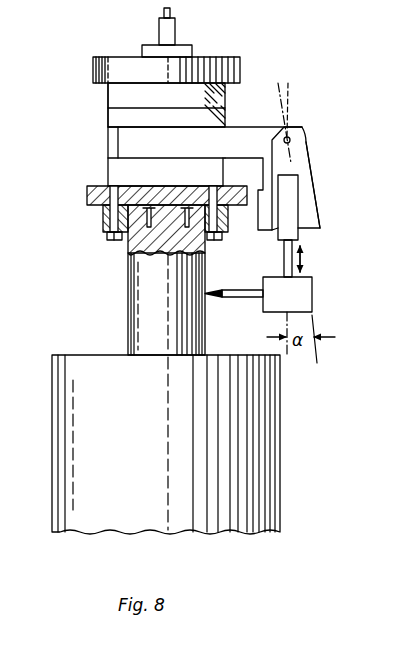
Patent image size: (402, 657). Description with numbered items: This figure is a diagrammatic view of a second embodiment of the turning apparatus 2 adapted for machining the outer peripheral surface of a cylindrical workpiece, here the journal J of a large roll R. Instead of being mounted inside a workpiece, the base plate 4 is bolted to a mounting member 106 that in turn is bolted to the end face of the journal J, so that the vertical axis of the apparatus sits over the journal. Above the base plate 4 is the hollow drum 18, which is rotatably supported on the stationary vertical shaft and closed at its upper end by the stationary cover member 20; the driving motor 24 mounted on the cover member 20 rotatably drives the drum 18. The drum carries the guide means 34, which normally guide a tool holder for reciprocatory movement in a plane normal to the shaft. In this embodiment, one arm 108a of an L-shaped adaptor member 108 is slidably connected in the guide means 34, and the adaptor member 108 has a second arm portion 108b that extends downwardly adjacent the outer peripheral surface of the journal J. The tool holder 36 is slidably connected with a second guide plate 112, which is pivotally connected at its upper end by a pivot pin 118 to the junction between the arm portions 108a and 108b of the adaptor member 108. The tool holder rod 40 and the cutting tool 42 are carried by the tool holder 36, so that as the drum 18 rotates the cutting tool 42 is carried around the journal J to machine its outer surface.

The turning apparatus 2 is at (239, 55).
The base plate 4 is at (87, 197).
The hollow drum 18 is at (118, 98).
The stationary cover member 20 is at (93, 67).
The driving motor 24 is at (175, 32).
The guide means 34 is at (117, 172).
The tool holder 36 is at (288, 197).
The tool holder shaft 40 is at (285, 267).
The cutting tool 42 is at (235, 298).
The mounting member 106 is at (103, 230).
The L-shaped adaptor member 108 is at (232, 126).
The first arm of adaptor member 108a is at (118, 143).
The second arm portion of adaptor member 108b is at (318, 215).
The second guide plate 112 is at (290, 160).
The pivot pin 118 is at (298, 133).
The journal J is at (138, 318).
The roll R is at (268, 418).